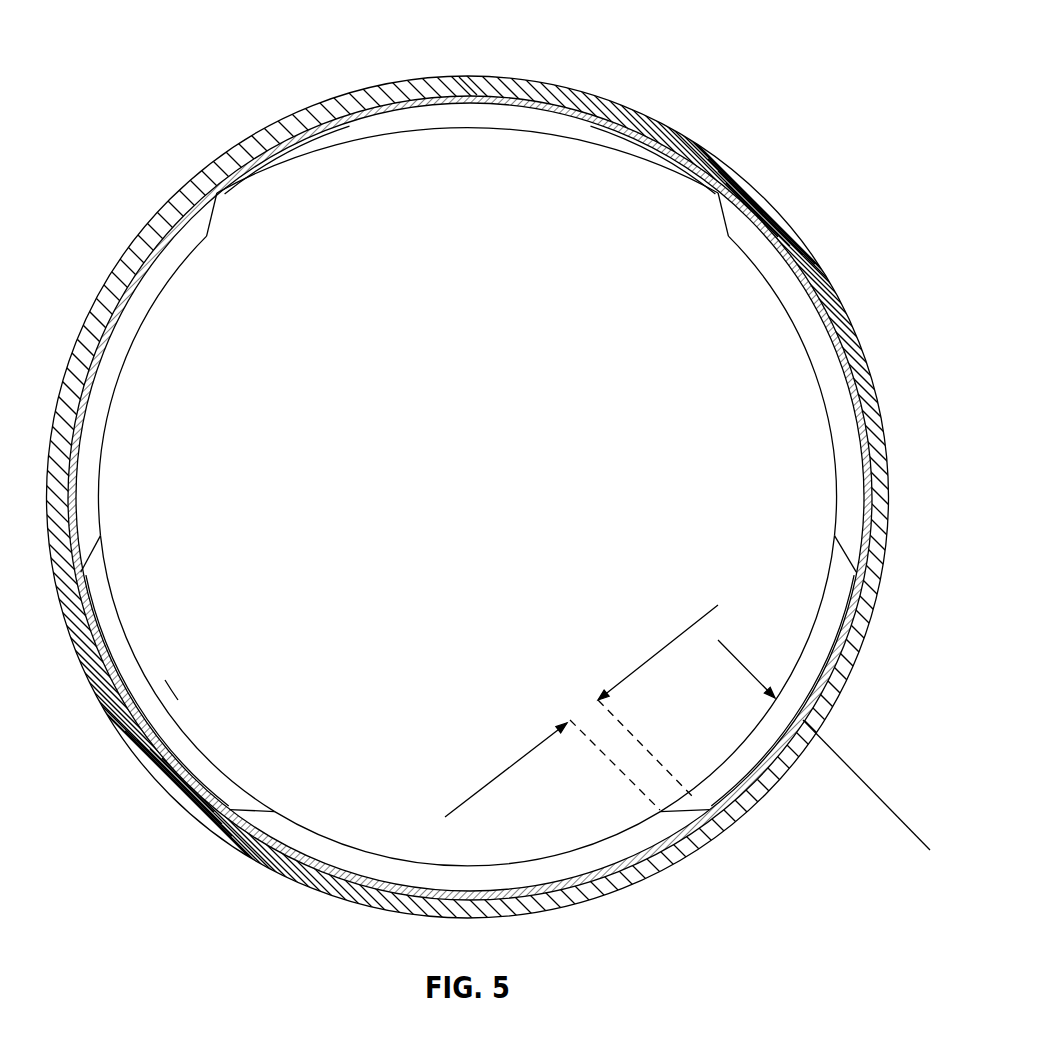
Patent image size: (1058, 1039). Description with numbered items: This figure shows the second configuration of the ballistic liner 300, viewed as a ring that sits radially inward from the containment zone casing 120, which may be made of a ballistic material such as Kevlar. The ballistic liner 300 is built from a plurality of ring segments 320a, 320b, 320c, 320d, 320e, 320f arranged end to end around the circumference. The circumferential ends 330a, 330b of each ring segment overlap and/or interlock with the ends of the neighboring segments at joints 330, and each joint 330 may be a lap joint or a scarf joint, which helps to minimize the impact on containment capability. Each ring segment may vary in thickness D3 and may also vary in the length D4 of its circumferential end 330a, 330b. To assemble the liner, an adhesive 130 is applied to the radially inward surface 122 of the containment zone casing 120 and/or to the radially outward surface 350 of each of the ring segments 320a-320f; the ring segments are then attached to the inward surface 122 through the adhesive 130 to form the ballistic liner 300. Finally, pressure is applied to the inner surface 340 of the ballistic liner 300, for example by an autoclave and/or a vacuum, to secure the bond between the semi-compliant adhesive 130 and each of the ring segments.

The ballistic liner 300 is at (757, 75).
The containment zone casing 120 is at (828, 290).
The adhesive 130 is at (853, 385).
The radially inward surface 122 is at (204, 770).
The radially outward surface 350 is at (473, 80).
The ring segment 320a is at (343, 140).
The ring segment 320b is at (800, 332).
The ring segment 320c is at (817, 652).
The ring segment 320d is at (400, 862).
The ring segment 320e is at (128, 662).
The ring segment 320f is at (124, 345).
The joint 330 is at (110, 536).
The circumferential end 330a is at (214, 214).
The circumferential end 330b is at (726, 212).
The inner surface 340 is at (181, 697).
The thickness D3 is at (876, 795).
The length of the circumferential end D4 is at (505, 765).